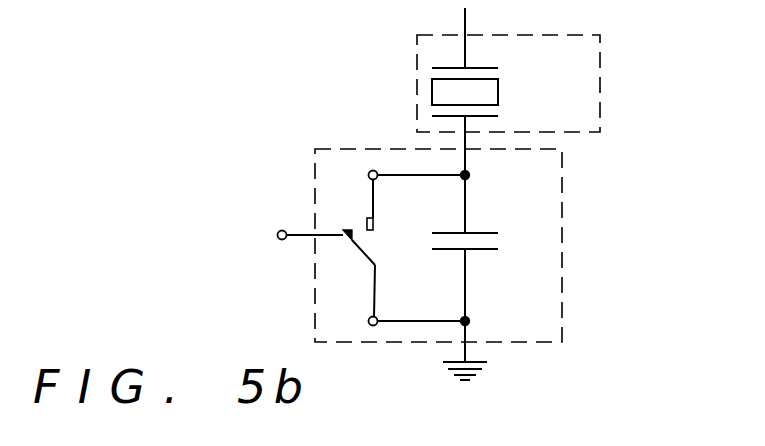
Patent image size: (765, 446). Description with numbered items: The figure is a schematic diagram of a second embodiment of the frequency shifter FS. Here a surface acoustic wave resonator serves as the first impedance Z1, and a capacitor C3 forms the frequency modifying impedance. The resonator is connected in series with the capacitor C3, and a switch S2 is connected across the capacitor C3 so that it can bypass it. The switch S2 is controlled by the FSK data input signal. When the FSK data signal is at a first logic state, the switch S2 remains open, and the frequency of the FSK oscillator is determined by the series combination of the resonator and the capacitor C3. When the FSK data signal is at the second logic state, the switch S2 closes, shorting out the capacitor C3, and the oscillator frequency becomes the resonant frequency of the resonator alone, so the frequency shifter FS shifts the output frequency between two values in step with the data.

The first impedance Z1 is at (600, 110).
The frequency shifter FS is at (358, 148).
The switch S2 is at (356, 248).
The capacitor C3 is at (489, 248).